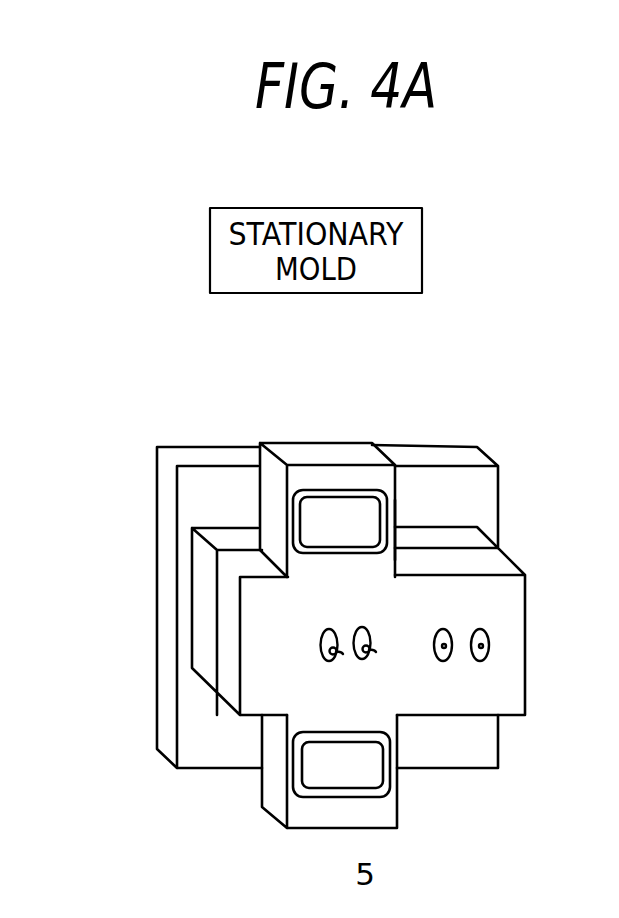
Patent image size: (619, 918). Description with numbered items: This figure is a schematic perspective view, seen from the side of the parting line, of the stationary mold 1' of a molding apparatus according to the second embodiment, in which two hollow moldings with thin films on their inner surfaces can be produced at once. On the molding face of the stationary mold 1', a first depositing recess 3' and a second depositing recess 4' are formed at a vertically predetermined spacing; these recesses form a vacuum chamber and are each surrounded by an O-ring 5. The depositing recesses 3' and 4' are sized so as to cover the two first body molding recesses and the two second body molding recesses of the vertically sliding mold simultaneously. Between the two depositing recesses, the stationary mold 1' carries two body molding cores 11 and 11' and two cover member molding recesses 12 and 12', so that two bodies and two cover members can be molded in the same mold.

The stationary mold 1' is at (341, 564).
The first depositing recess 3' is at (420, 478).
The second depositing recess 4' is at (382, 786).
The O-ring 5 is at (394, 512).
The body molding core 11 is at (228, 685).
The body molding core 11' is at (287, 723).
The cover member molding recess 12 is at (491, 694).
The cover member molding recess 12' is at (533, 642).